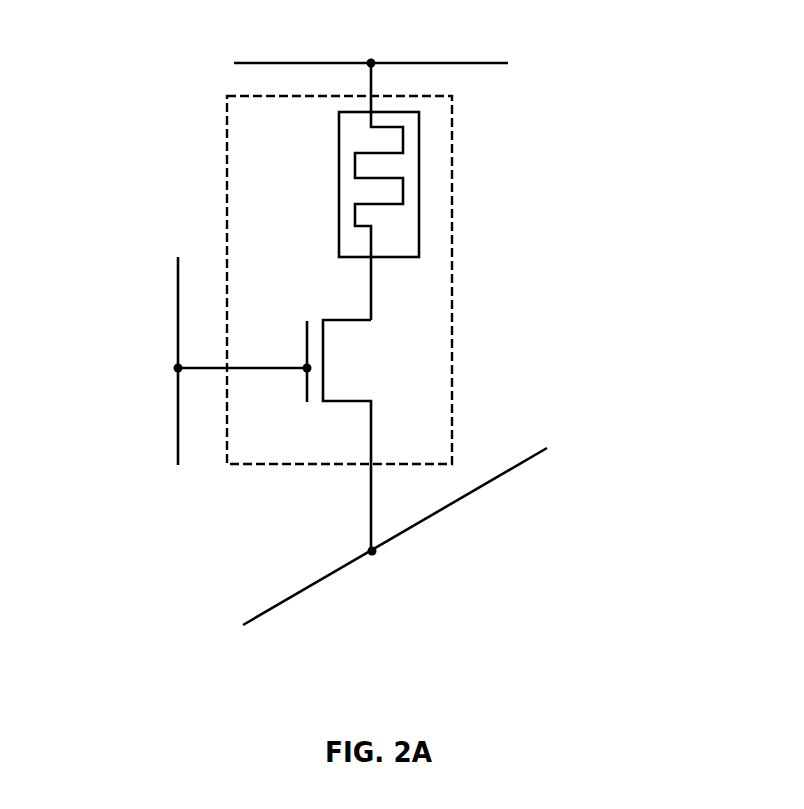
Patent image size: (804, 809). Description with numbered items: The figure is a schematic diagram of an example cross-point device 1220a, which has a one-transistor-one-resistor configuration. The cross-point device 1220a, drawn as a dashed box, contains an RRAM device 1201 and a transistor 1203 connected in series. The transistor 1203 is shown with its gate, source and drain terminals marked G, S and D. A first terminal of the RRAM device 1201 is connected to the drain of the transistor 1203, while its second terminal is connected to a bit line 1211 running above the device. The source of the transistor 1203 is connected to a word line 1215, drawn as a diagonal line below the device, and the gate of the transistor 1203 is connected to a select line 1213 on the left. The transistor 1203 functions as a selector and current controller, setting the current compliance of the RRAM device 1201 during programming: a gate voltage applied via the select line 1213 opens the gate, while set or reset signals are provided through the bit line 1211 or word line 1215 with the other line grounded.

The bit line 1211 is at (458, 63).
The cross-point device 1220a is at (227, 139).
The RRAM device 1201 is at (338, 187).
The transistor 1203 is at (323, 368).
The select line 1213 is at (177, 320).
The word line 1215 is at (438, 513).